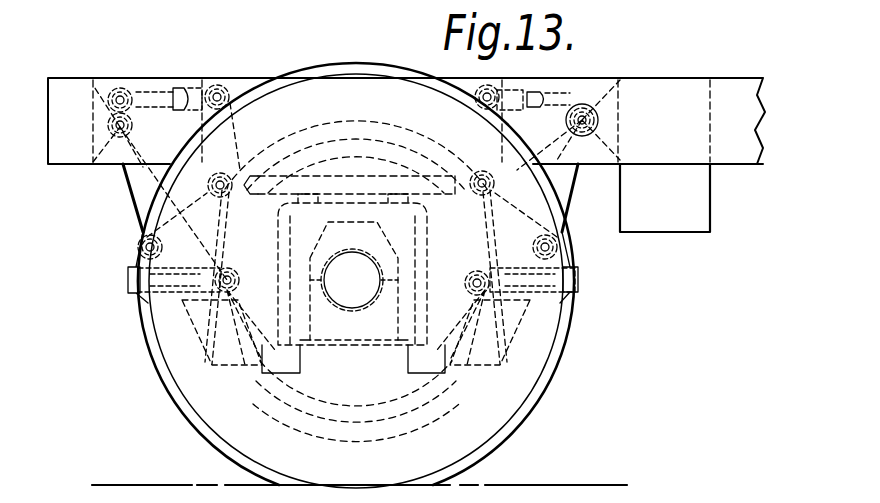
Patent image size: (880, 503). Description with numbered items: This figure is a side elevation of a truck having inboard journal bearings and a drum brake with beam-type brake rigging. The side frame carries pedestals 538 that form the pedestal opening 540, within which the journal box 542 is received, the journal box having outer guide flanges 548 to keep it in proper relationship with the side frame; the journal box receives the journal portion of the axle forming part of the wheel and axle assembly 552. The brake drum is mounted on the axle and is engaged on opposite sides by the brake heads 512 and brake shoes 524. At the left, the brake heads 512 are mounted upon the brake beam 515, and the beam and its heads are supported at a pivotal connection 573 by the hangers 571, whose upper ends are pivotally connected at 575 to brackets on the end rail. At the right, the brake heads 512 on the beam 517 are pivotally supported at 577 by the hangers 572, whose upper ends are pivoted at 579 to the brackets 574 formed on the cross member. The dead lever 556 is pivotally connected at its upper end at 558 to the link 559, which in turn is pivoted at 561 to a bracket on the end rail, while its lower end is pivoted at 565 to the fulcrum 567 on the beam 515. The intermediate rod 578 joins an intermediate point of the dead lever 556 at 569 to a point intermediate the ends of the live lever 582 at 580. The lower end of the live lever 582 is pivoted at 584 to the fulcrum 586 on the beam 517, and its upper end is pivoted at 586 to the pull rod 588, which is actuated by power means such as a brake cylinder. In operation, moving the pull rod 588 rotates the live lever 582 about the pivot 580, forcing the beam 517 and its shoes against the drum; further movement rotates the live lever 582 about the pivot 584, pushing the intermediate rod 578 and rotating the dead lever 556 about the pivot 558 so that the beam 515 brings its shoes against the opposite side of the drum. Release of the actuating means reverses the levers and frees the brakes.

The brake heads 512 is at (192, 354).
The brake beam 515 is at (128, 279).
The brake beam 517 is at (570, 278).
The brake shoes 524 is at (221, 366).
The pedestals 538 is at (273, 374).
The pedestal opening 540 is at (340, 199).
The journal box 542 is at (397, 355).
The outer guide flanges 548 is at (407, 373).
The wheel and axle assembly 552 is at (514, 426).
The dead lever 556 is at (231, 128).
The pivotal connection 558 is at (214, 99).
The link 559 is at (155, 99).
The pivotal connection 561 is at (115, 107).
The pivotal connection 565 is at (190, 333).
The fulcrum 567 is at (215, 280).
The connection 569 is at (231, 177).
The hangers 571 is at (133, 186).
The hangers 572 is at (570, 204).
The pivotal connection 573 is at (140, 249).
The brackets 574 is at (603, 144).
The pivotal connection 575 is at (115, 123).
The pivotal connection 577 is at (557, 250).
The intermediate rod 578 is at (313, 170).
The pivotal connection 579 is at (583, 118).
The connection 580 is at (488, 172).
The live lever 582 is at (488, 160).
The pivotal connection 584 is at (540, 318).
The fulcrum 586 is at (477, 98).
The pull rod 588 is at (484, 170).